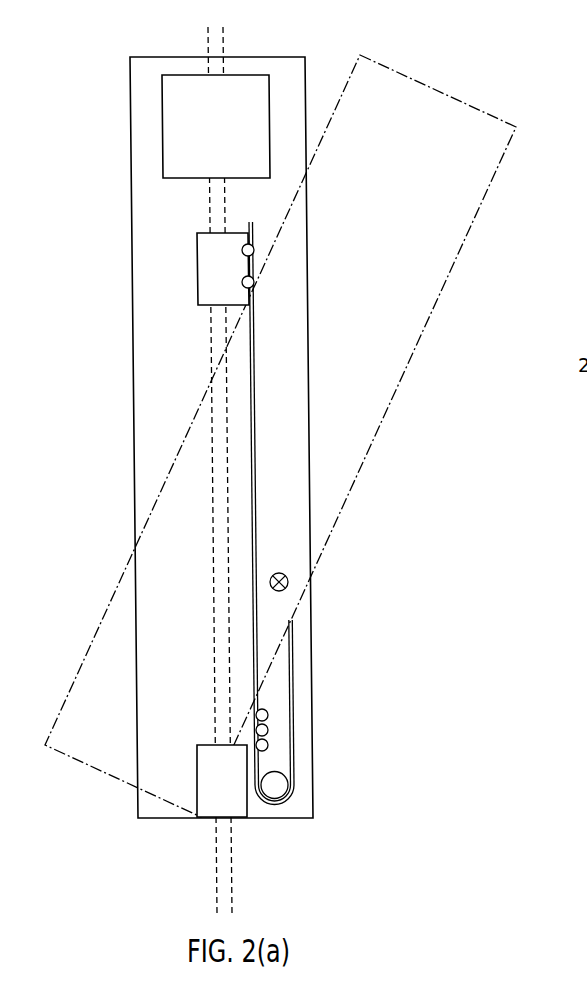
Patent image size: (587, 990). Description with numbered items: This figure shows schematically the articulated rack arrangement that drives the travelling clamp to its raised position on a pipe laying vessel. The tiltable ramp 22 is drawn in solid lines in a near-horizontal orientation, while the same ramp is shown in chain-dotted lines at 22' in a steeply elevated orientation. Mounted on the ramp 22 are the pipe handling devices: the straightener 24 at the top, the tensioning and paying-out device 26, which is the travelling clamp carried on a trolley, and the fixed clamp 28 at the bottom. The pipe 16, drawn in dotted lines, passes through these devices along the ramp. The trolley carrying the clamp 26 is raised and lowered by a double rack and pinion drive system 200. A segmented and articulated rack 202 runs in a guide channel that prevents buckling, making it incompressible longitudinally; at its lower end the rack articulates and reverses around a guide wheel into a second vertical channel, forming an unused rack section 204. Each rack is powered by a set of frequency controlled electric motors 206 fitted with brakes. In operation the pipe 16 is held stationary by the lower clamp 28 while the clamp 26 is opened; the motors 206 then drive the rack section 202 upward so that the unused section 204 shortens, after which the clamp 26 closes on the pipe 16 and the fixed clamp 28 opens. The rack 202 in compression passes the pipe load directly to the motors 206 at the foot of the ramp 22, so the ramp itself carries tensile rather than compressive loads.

The pipe 16 is at (216, 880).
The tiltable ramp 22 is at (196, 437).
The tiltable ramp in steeply elevated orientation 22' is at (280, 436).
The straightener 24 is at (162, 105).
The tensioning and paying-out device 26 is at (197, 272).
The fixed clamp 28 is at (197, 753).
The double rack and pinion drive system 200 is at (334, 513).
The segmented and articulated rack 202 is at (254, 331).
The unused rack section 204 is at (297, 671).
The frequency controlled electric motors 206 is at (295, 752).